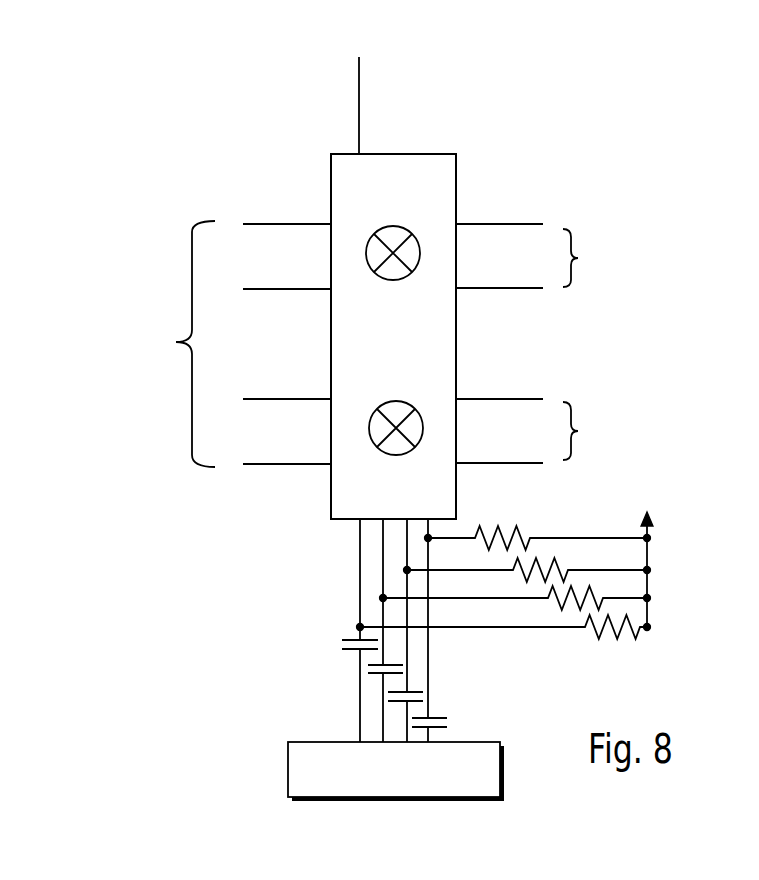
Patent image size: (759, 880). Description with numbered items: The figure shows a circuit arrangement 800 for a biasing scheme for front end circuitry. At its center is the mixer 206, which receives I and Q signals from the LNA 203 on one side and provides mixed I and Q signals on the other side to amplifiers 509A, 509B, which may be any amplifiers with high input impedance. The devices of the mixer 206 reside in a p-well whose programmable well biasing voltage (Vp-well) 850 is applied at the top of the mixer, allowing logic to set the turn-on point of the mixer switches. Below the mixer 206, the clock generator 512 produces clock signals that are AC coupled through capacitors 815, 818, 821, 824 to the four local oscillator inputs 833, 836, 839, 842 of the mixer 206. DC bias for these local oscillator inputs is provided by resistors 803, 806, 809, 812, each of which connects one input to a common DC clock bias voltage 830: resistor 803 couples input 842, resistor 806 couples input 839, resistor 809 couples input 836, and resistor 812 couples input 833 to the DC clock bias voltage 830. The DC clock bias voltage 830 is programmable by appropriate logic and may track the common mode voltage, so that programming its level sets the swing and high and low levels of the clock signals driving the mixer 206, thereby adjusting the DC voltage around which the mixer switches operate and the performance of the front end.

The circuit arrangement 800 is at (582, 51).
The mixer 206 is at (382, 153).
The well biasing signal or voltage (Vp-well) 850 is at (357, 86).
The LNA 203 is at (223, 344).
The amplifier 509A is at (592, 256).
The amplifier 509B is at (595, 431).
The input 833 is at (358, 529).
The input 836 is at (381, 553).
The input 839 is at (408, 542).
The input 842 is at (430, 535).
The resistor 803 is at (487, 523).
The resistor 806 is at (527, 553).
The resistor 809 is at (551, 625).
The resistor 812 is at (588, 633).
The DC clock bias voltage 830 is at (648, 587).
The capacitor 815 is at (355, 652).
The capacitor 818 is at (378, 677).
The capacitor 821 is at (417, 693).
The capacitor 824 is at (435, 720).
The clock generator 512 is at (463, 742).